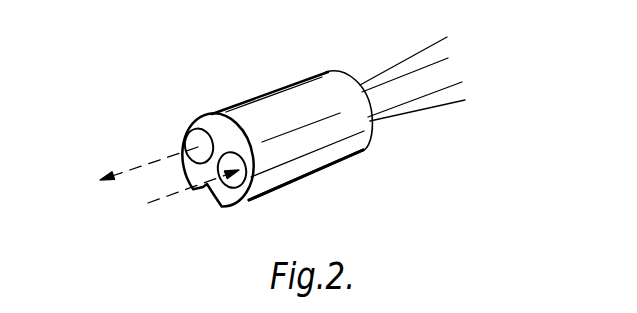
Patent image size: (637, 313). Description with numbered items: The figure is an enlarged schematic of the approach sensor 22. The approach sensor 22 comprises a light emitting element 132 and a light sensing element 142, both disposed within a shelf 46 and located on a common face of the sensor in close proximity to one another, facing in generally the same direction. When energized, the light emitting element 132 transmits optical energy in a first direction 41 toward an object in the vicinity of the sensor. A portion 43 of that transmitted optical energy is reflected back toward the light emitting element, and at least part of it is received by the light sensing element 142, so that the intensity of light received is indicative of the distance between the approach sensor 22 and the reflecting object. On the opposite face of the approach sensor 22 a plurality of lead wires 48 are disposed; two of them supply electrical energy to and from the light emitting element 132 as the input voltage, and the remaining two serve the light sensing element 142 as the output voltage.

The approach sensor 22 is at (352, 168).
The light emitting element 132 is at (198, 126).
The light sensing element 142 is at (231, 207).
The first direction 41 is at (143, 164).
The portion of the transmitted optical energy 43 is at (181, 195).
The shelf 46 is at (325, 172).
The lead wires 48 is at (463, 22).